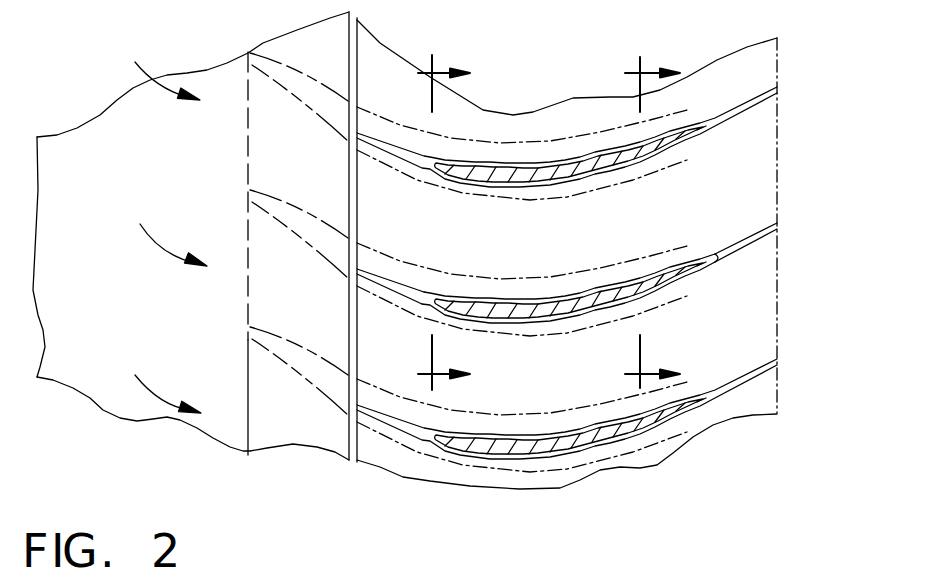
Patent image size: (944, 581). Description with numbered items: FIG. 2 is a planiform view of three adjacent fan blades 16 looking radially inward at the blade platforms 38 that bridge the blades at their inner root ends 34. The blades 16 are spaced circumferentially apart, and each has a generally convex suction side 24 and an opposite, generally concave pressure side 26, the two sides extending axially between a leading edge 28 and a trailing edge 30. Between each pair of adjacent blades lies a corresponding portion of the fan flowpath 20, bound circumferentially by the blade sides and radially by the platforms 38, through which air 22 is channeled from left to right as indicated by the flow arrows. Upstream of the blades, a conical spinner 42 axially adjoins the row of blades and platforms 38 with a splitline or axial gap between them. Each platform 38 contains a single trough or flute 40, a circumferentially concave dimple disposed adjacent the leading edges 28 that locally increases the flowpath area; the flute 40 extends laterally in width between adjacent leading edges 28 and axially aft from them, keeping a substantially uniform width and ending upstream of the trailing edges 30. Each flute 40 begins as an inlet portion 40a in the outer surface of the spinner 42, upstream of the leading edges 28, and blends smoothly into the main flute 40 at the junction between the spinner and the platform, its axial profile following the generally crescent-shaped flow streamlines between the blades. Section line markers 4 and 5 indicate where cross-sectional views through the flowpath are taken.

The fan blade 16 is at (555, 146).
The fan flowpath 20 is at (631, 232).
The air 22 is at (160, 247).
The suction side 24 is at (568, 314).
The pressure side 26 is at (568, 309).
The leading edge 28 is at (414, 267).
The trailing edge 30 is at (770, 263).
The inner end 34 is at (733, 234).
The inter-blade platform 38 is at (752, 316).
The flute 40 is at (370, 196).
The inlet portion 40a is at (283, 278).
The conical spinner 42 is at (160, 213).
The section line 4 is at (444, 209).
The section line 5 is at (652, 211).